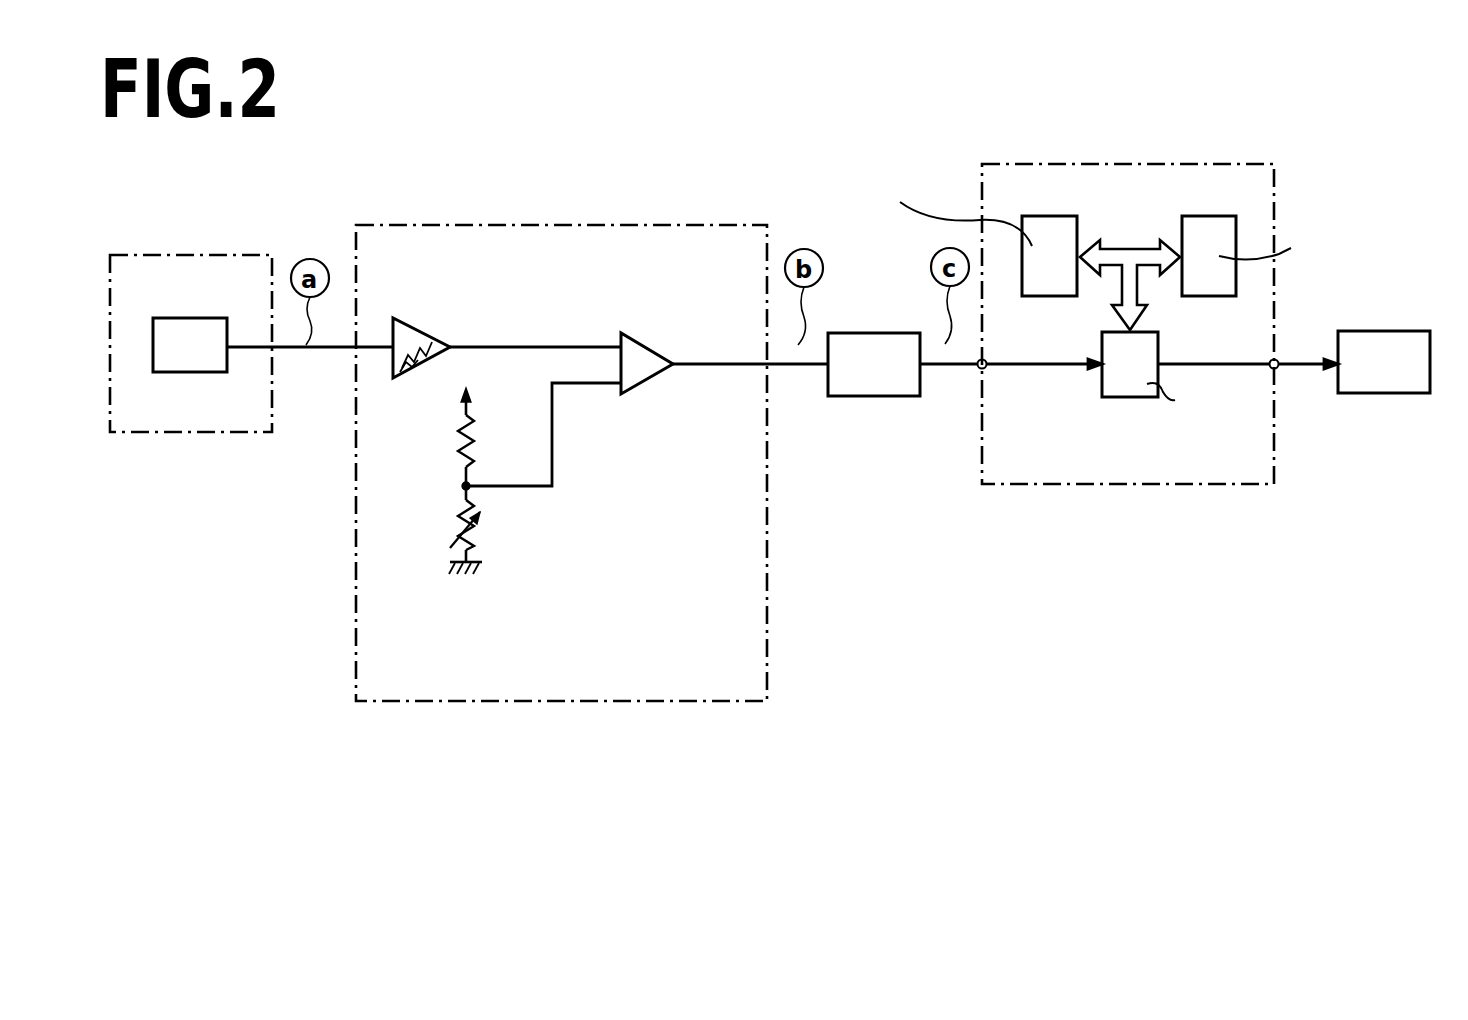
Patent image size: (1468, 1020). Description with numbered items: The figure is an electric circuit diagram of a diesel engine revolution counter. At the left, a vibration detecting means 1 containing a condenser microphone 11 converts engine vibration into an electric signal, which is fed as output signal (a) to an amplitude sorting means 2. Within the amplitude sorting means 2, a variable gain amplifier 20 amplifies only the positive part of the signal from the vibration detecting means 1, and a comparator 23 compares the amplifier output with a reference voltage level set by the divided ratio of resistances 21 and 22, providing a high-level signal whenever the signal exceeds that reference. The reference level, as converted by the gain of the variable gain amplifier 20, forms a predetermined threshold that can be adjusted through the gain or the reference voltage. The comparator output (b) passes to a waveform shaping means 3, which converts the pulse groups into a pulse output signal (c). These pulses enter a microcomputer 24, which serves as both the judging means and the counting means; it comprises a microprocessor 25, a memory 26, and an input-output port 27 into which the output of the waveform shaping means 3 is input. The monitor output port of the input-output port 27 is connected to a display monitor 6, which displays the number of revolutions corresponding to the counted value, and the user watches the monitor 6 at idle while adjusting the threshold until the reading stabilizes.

The vibration detecting means 1 is at (177, 437).
The condenser microphone 11 is at (184, 318).
The amplitude sorting means 2 is at (557, 705).
The variable gain amplifier 20 is at (437, 330).
The resistance 21 is at (460, 439).
The resistance 22 is at (460, 521).
The comparator 23 is at (656, 334).
The waveform shaping means 3 is at (878, 398).
The microcomputer 24 is at (1143, 488).
The microprocessor 25 is at (1031, 214).
The memory 26 is at (1225, 216).
The input-output port 27 is at (1130, 399).
The display monitor 6 is at (1392, 395).